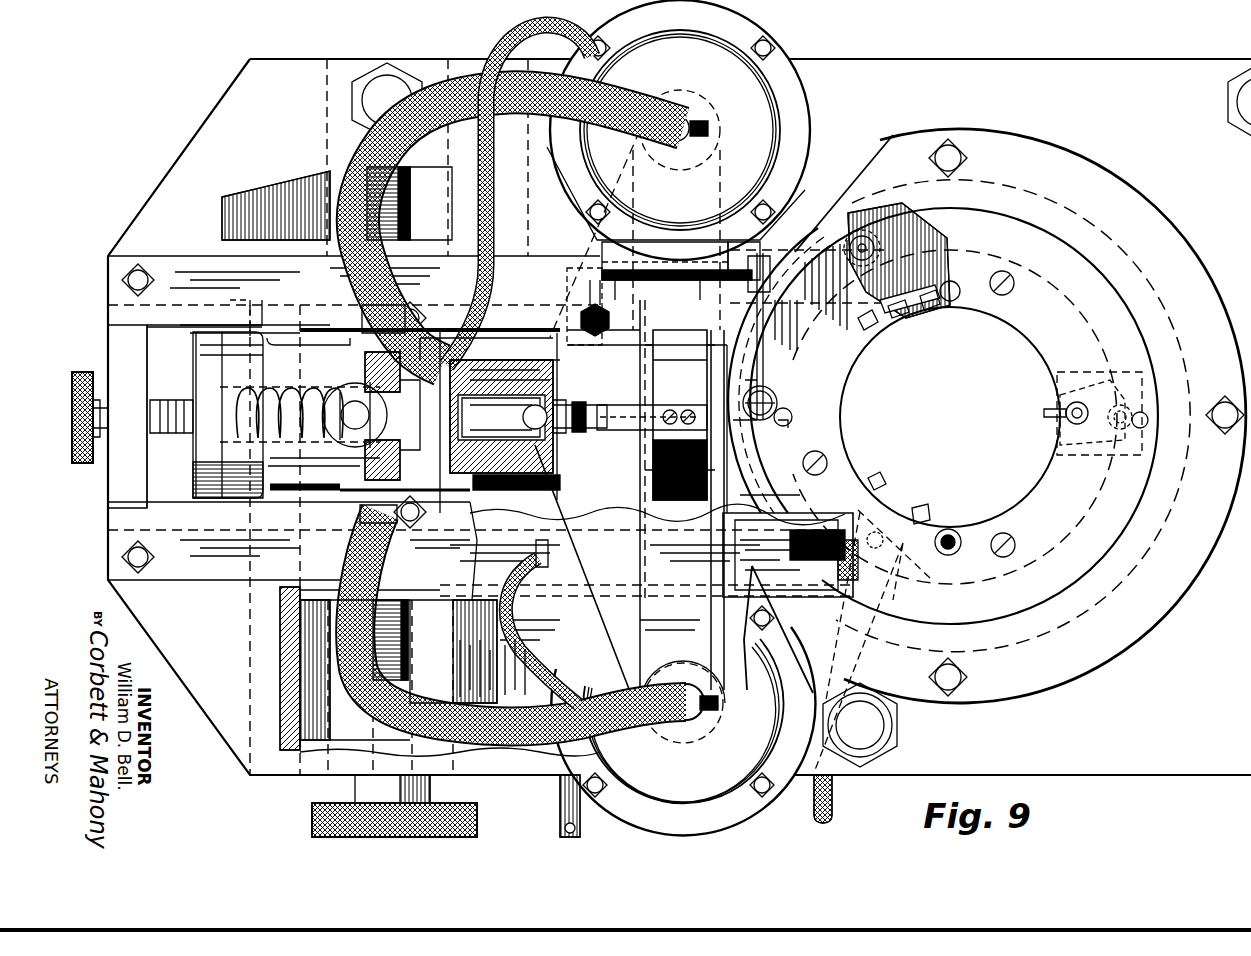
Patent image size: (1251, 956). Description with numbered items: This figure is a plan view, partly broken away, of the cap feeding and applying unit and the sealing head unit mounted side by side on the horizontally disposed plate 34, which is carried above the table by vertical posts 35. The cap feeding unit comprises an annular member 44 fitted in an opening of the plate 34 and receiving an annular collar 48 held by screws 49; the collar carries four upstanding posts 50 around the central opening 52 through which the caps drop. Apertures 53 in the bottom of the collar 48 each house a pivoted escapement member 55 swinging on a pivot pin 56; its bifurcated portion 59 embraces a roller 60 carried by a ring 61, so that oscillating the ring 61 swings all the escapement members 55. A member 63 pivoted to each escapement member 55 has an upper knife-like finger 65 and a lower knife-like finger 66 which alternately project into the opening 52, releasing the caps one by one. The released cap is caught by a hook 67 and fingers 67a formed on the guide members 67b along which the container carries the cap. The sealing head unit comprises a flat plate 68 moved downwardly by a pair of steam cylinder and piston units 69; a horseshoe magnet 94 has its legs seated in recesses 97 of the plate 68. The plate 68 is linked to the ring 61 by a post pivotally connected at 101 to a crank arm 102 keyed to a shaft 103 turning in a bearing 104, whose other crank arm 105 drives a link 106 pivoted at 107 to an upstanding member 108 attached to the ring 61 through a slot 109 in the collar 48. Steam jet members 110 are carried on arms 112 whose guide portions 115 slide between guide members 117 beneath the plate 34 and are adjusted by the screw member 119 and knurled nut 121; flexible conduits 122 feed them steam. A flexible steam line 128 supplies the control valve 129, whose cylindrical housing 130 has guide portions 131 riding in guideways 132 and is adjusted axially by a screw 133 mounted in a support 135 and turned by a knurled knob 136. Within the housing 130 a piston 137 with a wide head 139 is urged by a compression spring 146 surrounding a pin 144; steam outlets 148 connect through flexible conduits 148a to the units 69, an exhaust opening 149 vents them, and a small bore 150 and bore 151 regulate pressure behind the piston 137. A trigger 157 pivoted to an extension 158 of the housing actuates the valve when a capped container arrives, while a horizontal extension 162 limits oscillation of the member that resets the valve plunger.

The plate 34 is at (218, 128).
The posts 35 is at (1236, 100).
The annular member 44 is at (1166, 234).
The annular collar 48 is at (1160, 334).
The screws 49 is at (1011, 292).
The upstanding posts 50 is at (950, 532).
The central opening 52 is at (1020, 344).
The apertures 53 is at (905, 286).
The escapement member 55 is at (960, 291).
The pivot pin 56 is at (900, 256).
The bifurcated portion 59 is at (877, 262).
The roller 60 is at (1150, 418).
The ring 61 is at (810, 295).
The member 63 is at (895, 318).
The upper knife-like finger 65 is at (928, 310).
The lower knife-like finger 66 is at (868, 330).
The hook 67 is at (1044, 413).
The fingers 67a is at (921, 506).
The guide members 67b is at (820, 528).
The flat plate 68 is at (622, 625).
The steam cylinder and piston units 69 is at (788, 118).
The horseshoe magnet 94 is at (650, 456).
The recesses 97 is at (688, 330).
The pivotal connection 101 is at (604, 322).
The crank arm 102 is at (600, 298).
The shaft 103 is at (690, 284).
The bearing 104 is at (668, 252).
The crank arm 105 is at (745, 252).
The link 106 is at (764, 370).
The pivotal connection 107 is at (778, 400).
The upstanding member 108 is at (774, 406).
The slot 109 is at (760, 437).
The steam jet members 110 is at (777, 548).
The arm 112 is at (760, 612).
The guide portion 115 is at (320, 745).
The guide members 117 is at (286, 215).
The screw member 119 is at (410, 200).
The knurled nut 121 is at (478, 808).
The flexible conduit 122 is at (560, 655).
The flexible steam line 128 is at (494, 222).
The control valve 129 is at (193, 345).
The cylindrical housing 130 is at (235, 362).
The guide portions 131 is at (240, 312).
The guideways 132 is at (165, 322).
The screw 133 is at (170, 433).
The support 135 is at (125, 350).
The knurled knob 136 is at (83, 463).
The piston 137 is at (426, 500).
The head 139 is at (495, 372).
The pin 144 is at (235, 432).
The compression spring 146 is at (235, 390).
The steam outlets 148 is at (380, 380).
The flexible conduit 148a is at (640, 96).
The exhaust opening 149 is at (342, 400).
The small bore 150 is at (476, 420).
The bore 151 is at (556, 428).
The trigger 157 is at (575, 422).
The extension 158 is at (582, 404).
The horizontal extension 162 is at (662, 414).